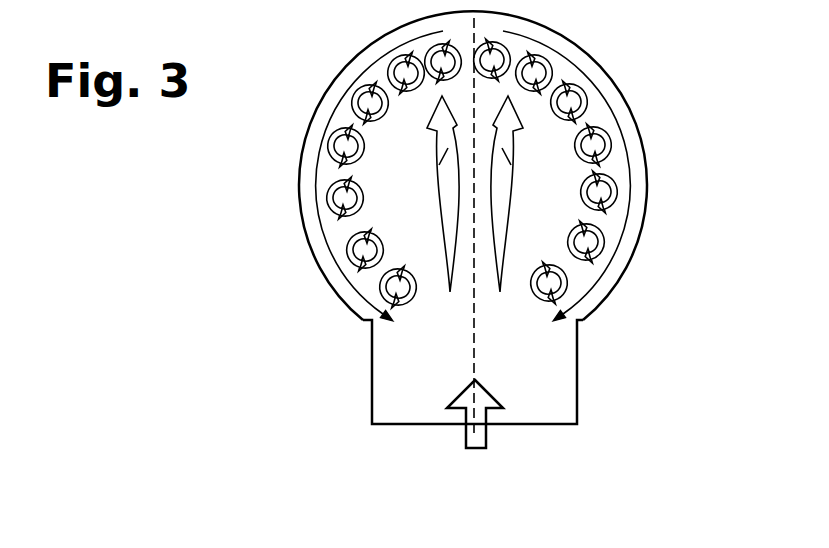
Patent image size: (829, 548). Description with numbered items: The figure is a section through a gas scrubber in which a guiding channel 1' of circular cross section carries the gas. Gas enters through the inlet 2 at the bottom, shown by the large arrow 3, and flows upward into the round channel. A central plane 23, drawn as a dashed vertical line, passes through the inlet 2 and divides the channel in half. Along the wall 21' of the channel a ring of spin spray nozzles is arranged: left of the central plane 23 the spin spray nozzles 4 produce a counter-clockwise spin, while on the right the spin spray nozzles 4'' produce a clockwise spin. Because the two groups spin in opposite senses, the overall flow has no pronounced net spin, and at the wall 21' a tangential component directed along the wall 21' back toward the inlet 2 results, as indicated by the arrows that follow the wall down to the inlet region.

The guiding channel 1' is at (523, 165).
The inlet 2 is at (566, 399).
The inlet gas flow 3 is at (476, 435).
The spin spray nozzles 4 is at (368, 174).
The vortex 4'' is at (578, 171).
The wall 21' is at (489, 175).
The central plane 23 is at (472, 346).